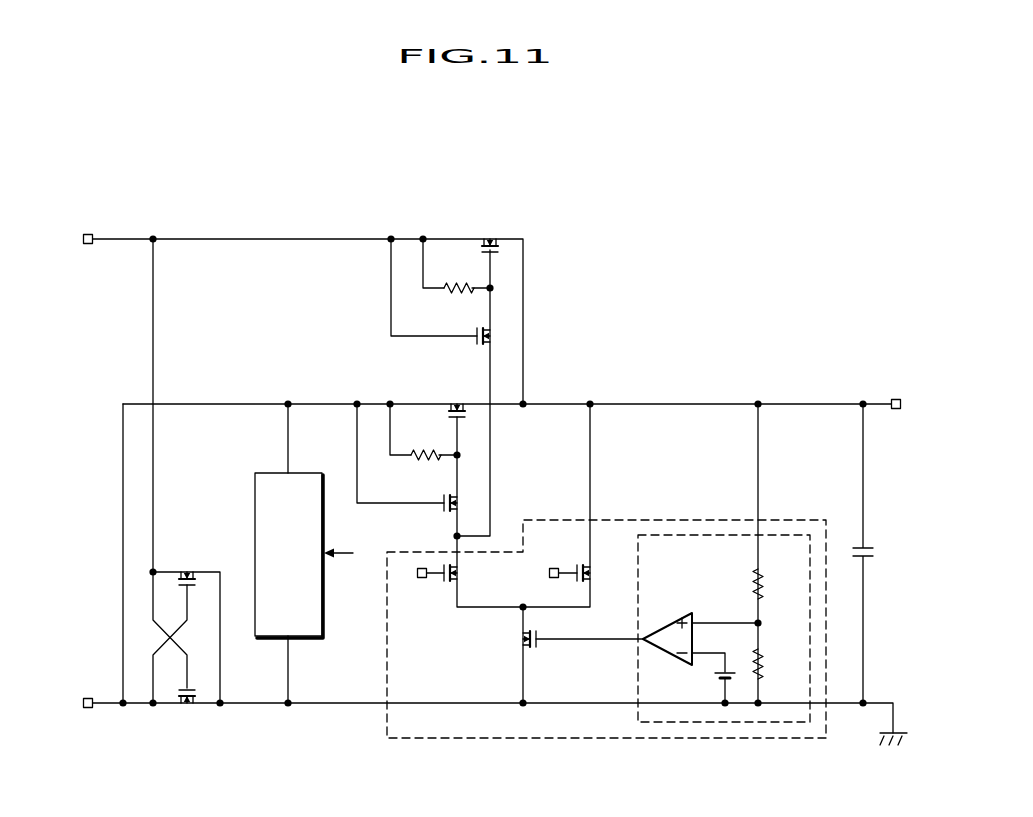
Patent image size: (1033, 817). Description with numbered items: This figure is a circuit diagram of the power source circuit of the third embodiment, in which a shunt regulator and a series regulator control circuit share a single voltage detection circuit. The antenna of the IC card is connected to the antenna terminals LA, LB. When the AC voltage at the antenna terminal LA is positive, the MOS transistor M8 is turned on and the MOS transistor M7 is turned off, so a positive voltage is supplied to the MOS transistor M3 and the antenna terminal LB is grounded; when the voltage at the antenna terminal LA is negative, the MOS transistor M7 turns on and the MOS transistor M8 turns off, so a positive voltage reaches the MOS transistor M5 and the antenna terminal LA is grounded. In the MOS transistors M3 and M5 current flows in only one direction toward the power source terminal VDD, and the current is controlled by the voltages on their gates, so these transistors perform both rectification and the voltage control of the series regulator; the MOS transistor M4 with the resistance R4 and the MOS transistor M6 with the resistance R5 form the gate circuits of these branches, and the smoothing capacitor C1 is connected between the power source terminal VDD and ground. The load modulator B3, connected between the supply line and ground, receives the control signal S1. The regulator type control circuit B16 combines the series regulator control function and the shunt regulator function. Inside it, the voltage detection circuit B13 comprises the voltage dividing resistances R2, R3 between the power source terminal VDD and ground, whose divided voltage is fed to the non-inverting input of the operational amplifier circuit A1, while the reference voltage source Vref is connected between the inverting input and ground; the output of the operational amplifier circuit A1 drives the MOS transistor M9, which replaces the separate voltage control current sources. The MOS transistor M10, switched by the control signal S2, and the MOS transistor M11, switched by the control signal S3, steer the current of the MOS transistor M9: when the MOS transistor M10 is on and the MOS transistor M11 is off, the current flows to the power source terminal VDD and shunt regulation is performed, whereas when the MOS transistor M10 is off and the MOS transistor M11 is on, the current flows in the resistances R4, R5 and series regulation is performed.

The antenna terminal LA is at (86, 234).
The antenna terminal LB is at (88, 708).
The power source terminal VDD is at (900, 398).
The MOS transistor M3 is at (491, 232).
The resistance R4 is at (456, 266).
The MOS transistor M4 is at (440, 291).
The MOS transistor M5 is at (458, 396).
The resistance R5 is at (423, 432).
The MOS transistor M6 is at (407, 457).
The load modulator B3 is at (304, 472).
The control signal S1 is at (355, 555).
The MOS transistor M7 is at (186, 624).
The MOS transistor M8 is at (190, 713).
The regulator type control circuit B16 is at (623, 519).
The voltage detection circuit B13 is at (696, 534).
The control signal S3 is at (410, 575).
The MOS transistor M11 is at (462, 575).
The control signal S2 is at (542, 575).
The MOS transistor M10 is at (597, 575).
The MOS transistor M9 is at (566, 641).
The operational amplifier circuit A1 is at (690, 612).
The reference voltage source Vref is at (704, 688).
The voltage dividing resistance R2 is at (775, 584).
The voltage dividing resistance R3 is at (775, 664).
The smoothing capacitor C1 is at (884, 553).